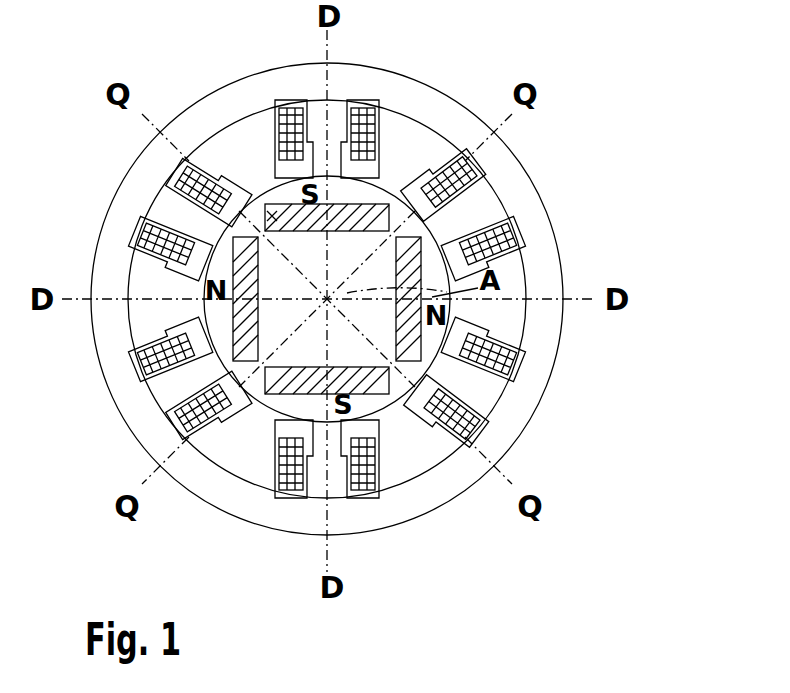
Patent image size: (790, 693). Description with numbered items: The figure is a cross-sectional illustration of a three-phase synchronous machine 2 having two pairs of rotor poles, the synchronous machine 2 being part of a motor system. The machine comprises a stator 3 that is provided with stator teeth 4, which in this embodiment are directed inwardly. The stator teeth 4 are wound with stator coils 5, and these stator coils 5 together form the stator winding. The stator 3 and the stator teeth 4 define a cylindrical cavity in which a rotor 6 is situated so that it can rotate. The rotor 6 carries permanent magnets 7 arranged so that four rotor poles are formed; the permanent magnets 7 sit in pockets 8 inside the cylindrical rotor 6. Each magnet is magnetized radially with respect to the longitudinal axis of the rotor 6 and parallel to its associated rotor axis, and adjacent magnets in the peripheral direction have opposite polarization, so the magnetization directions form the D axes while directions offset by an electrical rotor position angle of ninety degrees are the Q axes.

The synchronous machine 2 is at (578, 54).
The stator 3 is at (457, 120).
The stator teeth 4 is at (318, 117).
The stator coils 5 is at (370, 113).
The rotor 6 is at (385, 195).
The permanent magnets 7 is at (272, 208).
The pockets 8 is at (273, 213).